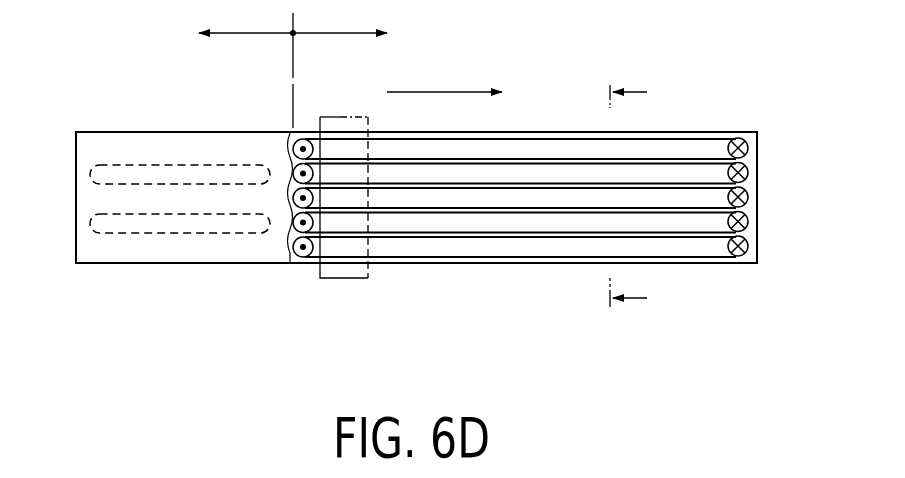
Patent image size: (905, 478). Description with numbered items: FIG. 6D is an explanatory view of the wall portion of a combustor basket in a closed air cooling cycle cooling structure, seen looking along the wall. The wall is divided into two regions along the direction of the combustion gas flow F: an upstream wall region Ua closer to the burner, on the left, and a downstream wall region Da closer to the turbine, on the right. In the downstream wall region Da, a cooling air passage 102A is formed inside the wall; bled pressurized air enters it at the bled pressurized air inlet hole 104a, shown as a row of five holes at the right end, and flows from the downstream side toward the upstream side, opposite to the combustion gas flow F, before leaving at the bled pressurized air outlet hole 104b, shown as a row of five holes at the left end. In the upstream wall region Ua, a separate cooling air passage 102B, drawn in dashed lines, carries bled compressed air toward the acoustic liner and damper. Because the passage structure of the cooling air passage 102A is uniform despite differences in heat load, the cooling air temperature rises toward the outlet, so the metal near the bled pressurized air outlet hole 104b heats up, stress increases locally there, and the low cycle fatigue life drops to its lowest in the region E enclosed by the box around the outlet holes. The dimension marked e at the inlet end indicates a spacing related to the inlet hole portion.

The cooling air passage 102A is at (483, 161).
The cooling air passage 102B is at (142, 188).
The bled pressurized air inlet hole 104a is at (728, 148).
The bled pressurized air outlet hole 104b is at (293, 149).
The region of the lowest fatigue life portion E is at (335, 284).
The combustion gas flow F is at (405, 92).
The upstream wall region Ua is at (246, 21).
The downstream wall region Da is at (338, 68).
The distance e is at (637, 197).